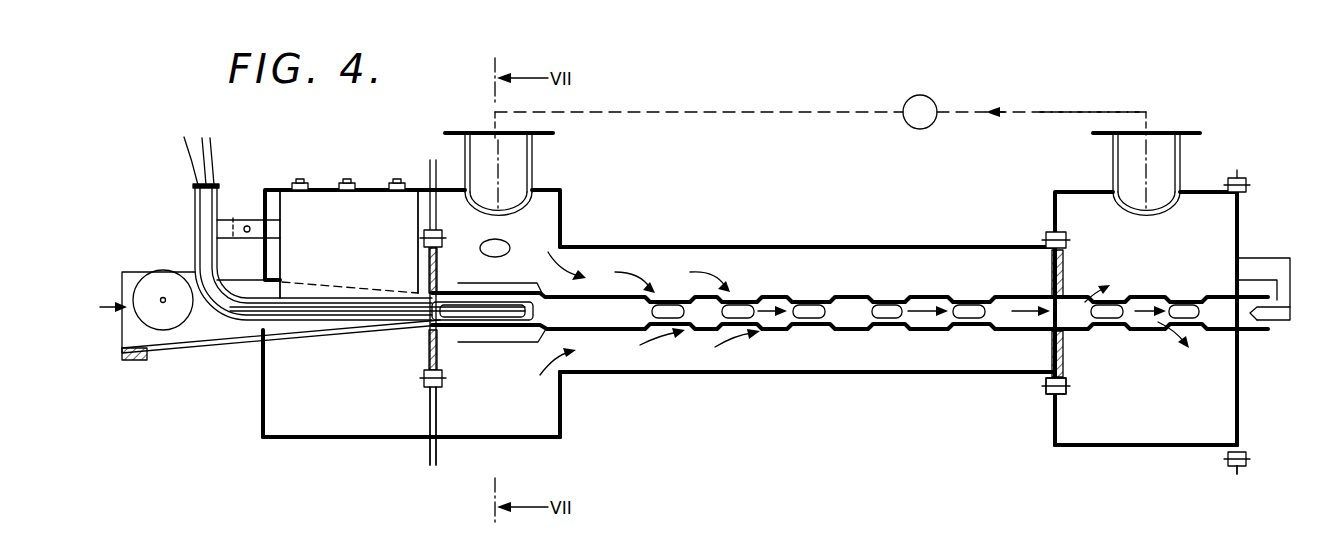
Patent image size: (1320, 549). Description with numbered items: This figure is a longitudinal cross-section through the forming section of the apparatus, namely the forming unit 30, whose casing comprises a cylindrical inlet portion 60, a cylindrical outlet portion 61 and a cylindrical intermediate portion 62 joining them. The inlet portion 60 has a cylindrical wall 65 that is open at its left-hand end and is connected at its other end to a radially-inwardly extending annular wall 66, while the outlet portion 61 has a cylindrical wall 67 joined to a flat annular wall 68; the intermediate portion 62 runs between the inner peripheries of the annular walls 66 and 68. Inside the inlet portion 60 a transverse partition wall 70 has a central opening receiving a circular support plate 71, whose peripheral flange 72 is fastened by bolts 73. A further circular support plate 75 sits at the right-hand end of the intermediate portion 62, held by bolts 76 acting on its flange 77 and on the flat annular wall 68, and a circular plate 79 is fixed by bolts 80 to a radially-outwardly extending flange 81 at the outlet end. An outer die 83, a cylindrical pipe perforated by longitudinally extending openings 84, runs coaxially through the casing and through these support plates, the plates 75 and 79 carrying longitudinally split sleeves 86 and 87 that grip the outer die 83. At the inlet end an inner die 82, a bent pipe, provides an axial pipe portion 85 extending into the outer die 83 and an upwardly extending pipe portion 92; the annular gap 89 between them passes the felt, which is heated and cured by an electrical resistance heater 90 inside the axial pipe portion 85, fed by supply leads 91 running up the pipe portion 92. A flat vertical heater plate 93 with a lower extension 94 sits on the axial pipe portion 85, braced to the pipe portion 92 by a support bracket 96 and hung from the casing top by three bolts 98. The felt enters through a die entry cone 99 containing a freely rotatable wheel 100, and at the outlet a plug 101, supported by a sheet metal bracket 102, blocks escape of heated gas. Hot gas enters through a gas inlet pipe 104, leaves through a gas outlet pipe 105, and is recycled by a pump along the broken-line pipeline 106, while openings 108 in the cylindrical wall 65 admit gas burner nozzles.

The forming unit 30 is at (762, 98).
The cylindrical inlet portion 60 is at (362, 448).
The cylindrical outlet portion 61 is at (1144, 462).
The cylindrical intermediate portion 62 is at (790, 388).
The cylindrical wall 65 is at (332, 440).
The radially-inwardly extending annular wall 66 is at (560, 410).
The cylindrical wall 67 is at (1120, 447).
The flat annular wall 68 is at (1058, 415).
The transverse partition wall 70 is at (438, 424).
The circular support plate 71 is at (437, 350).
The peripheral flange 72 is at (428, 390).
The bolts 73 is at (424, 378).
The circular support plate 75 is at (1054, 355).
The bolts 76 is at (1068, 384).
The flange 77 is at (1068, 394).
The circular plate 79 is at (1239, 405).
The bolts 80 is at (1227, 462).
The radially-outwardly extending flange 81 is at (1232, 474).
The inner die 82 is at (224, 330).
The outer die 83 is at (590, 296).
The longitudinally extending openings 84 is at (672, 296).
The axial pipe portion 85 is at (358, 298).
The longitudinally split sleeve 86 is at (1072, 298).
The longitudinally split sleeve 87 is at (1238, 338).
The annular gap 89 is at (508, 322).
The electrical resistance heater 90 is at (337, 324).
The supply leads 91 is at (206, 148).
The upwardly extending pipe portion 92 is at (196, 202).
The flat vertical heater plate 93 is at (349, 244).
The extension 94 is at (470, 304).
The support bracket 96 is at (227, 218).
The bolts 98 is at (396, 178).
The die entry cone 99 is at (118, 347).
The wheel 100 is at (160, 276).
The plug 101 is at (1286, 322).
The bracket 102 is at (1264, 270).
The gas inlet pipe 104 is at (534, 165).
The gas outlet pipe 105 is at (1112, 163).
The pipeline 106 is at (1072, 108).
The openings 108 is at (498, 242).